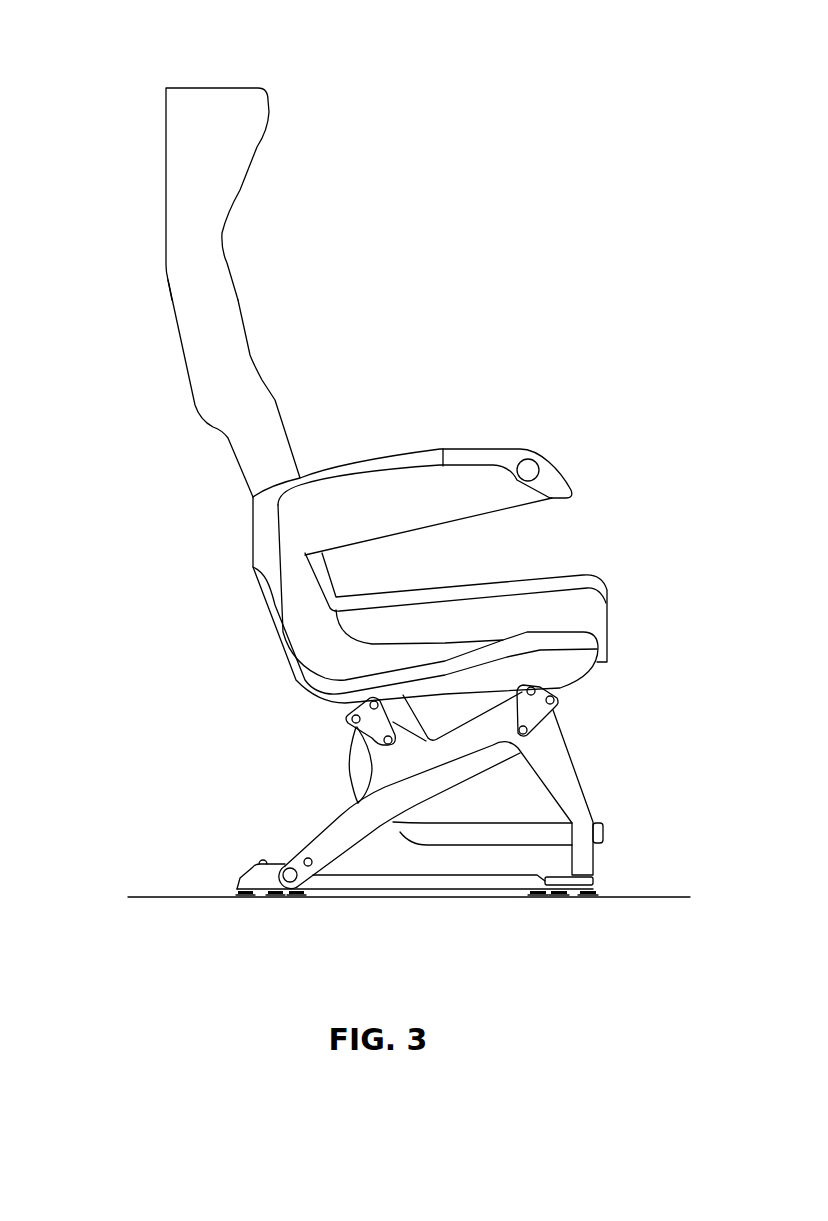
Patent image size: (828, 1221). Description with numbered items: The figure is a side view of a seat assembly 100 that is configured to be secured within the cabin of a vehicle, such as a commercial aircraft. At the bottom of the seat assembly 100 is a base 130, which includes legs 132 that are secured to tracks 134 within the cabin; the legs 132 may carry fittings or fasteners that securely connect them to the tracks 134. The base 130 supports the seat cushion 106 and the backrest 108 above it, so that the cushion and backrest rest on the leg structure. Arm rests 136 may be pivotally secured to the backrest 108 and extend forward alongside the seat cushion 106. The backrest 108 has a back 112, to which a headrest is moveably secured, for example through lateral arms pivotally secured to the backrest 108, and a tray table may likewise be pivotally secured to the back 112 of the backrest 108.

The seat assembly 100 is at (148, 89).
The seat cushion 106 is at (605, 587).
The backrest 108 is at (238, 207).
The back 112 is at (166, 229).
The base 130 is at (348, 814).
The legs 132 is at (238, 889).
The tracks 134 is at (315, 898).
The arm rests 136 is at (477, 449).